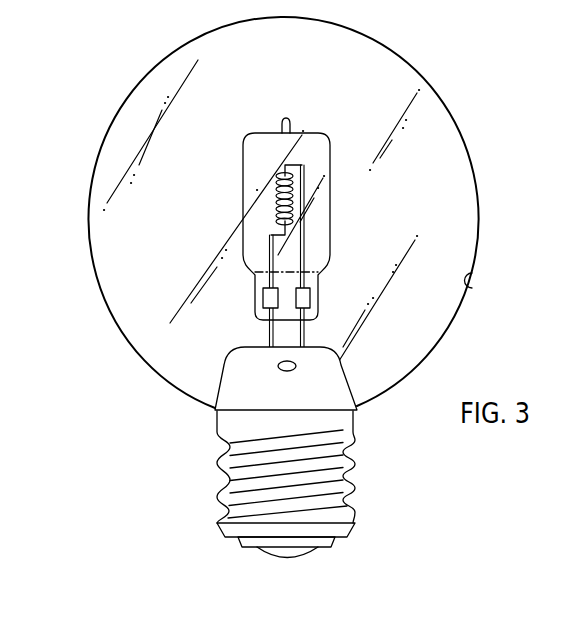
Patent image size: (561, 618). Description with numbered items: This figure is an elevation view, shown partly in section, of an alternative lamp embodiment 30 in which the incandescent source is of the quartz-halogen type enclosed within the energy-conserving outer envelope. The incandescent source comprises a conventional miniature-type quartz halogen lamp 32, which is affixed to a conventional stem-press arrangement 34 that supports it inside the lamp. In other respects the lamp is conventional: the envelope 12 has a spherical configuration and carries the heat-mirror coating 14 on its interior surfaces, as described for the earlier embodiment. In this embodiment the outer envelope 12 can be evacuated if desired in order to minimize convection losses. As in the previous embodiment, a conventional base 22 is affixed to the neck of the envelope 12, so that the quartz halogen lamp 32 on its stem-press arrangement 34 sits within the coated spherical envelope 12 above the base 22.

The alternative lamp embodiment 30 is at (57, 211).
The envelope 12 is at (466, 140).
The heat-mirror coating 14 is at (474, 289).
The miniature-type quartz halogen lamp 32 is at (330, 216).
The stem-press arrangement 34 is at (232, 374).
The base 22 is at (352, 483).